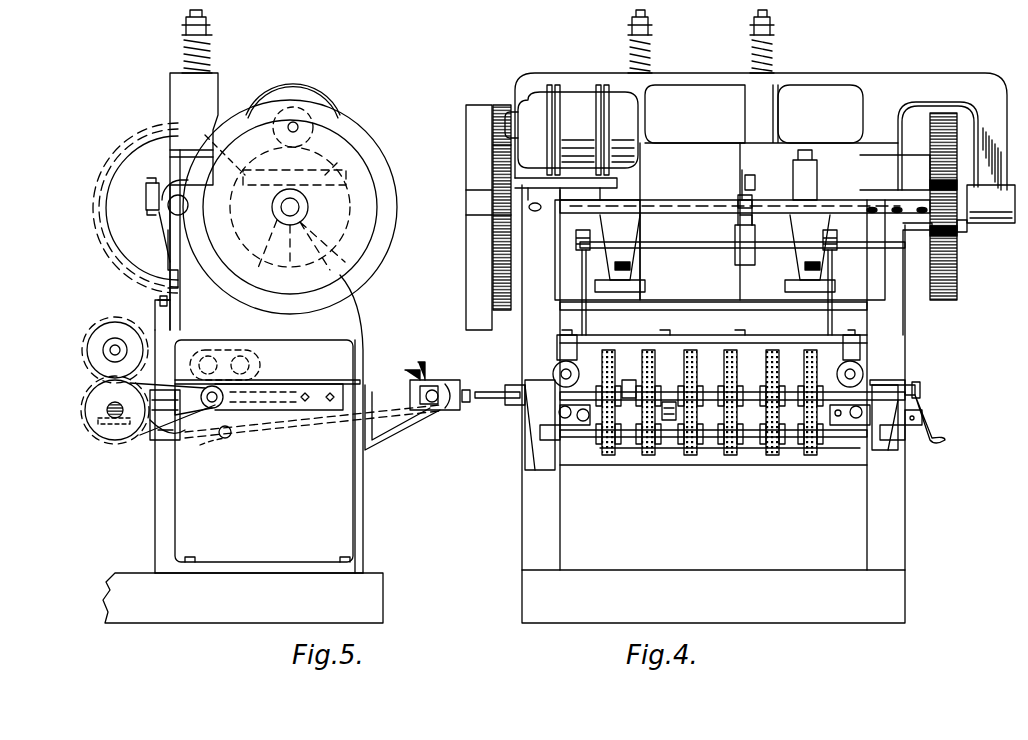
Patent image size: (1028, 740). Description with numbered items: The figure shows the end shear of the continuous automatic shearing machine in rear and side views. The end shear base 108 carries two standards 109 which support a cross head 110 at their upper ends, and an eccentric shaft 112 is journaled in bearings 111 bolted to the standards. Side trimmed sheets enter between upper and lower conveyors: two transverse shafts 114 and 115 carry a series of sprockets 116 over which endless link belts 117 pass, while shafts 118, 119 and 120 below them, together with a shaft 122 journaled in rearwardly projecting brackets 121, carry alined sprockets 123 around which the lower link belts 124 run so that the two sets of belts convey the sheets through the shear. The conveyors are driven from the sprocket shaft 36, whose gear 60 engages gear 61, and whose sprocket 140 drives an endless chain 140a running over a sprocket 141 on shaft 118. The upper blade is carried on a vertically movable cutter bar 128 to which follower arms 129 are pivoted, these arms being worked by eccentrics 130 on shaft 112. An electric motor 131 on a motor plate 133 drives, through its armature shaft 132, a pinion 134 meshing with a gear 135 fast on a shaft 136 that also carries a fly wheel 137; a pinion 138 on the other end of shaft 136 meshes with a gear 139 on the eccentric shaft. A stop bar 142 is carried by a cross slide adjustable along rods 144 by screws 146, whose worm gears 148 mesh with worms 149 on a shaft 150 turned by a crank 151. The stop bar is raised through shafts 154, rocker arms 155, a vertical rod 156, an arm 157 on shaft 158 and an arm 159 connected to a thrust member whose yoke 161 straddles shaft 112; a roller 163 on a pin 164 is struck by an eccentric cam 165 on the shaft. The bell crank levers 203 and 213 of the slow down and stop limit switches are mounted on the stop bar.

In FIG. 5, the end shear base 108 is at (163, 612).
In FIG. 4, the end shear base 108 is at (713, 596).
In FIG. 5, the standards 109 is at (360, 335).
In FIG. 4, the standards 109 is at (522, 336).
In FIG. 5, the cross head 110 is at (205, 90).
In FIG. 4, the cross head 110 is at (892, 70).
In FIG. 5, the bearings 111 is at (158, 215).
In FIG. 4, the bearings 111 is at (885, 190).
In FIG. 5, the eccentric shaft 112 is at (178, 195).
In FIG. 4, the eccentric shaft 112 is at (660, 200).
In FIG. 5, the transverse shaft 114 is at (210, 352).
In FIG. 5, the transverse shaft 115 is at (252, 356).
In FIG. 4, the transverse shaft 115 is at (625, 360).
In FIG. 4, the sprockets 116 is at (586, 356).
In FIG. 5, the link belts 117 is at (238, 352).
In FIG. 4, the link belts 117 is at (696, 358).
In FIG. 5, the shaft 118 is at (178, 388).
In FIG. 4, the shaft 118 is at (478, 400).
In FIG. 5, the shaft 119 is at (268, 410).
In FIG. 5, the shaft 120 is at (226, 450).
In FIG. 4, the shaft 120 is at (716, 440).
In FIG. 5, the brackets 121 is at (388, 436).
In FIG. 4, the brackets 121 is at (530, 445).
In FIG. 5, the shaft 122 is at (433, 390).
In FIG. 4, the shaft 122 is at (662, 444).
In FIG. 4, the sprockets 123 is at (608, 440).
In FIG. 5, the link belts 124 is at (318, 436).
In FIG. 4, the link belts 124 is at (818, 455).
In FIG. 5, the cutter bar 128 is at (165, 310).
In FIG. 4, the follower arms 129 is at (620, 262).
In FIG. 4, the eccentrics 130 is at (632, 178).
In FIG. 5, the electric motor 131 is at (318, 92).
In FIG. 4, the electric motor 131 is at (572, 96).
In FIG. 4, the armature shaft 132 is at (512, 110).
In FIG. 4, the motor plate 133 is at (580, 182).
In FIG. 5, the pinion 134 is at (318, 122).
In FIG. 4, the pinion 134 is at (500, 104).
In FIG. 5, the gear 135 is at (292, 252).
In FIG. 4, the gear 135 is at (490, 172).
In FIG. 5, the shaft 136 is at (276, 212).
In FIG. 4, the shaft 136 is at (490, 212).
In FIG. 5, the fly wheel 137 is at (385, 180).
In FIG. 4, the fly wheel 137 is at (470, 133).
In FIG. 4, the pinion 138 is at (960, 228).
In FIG. 5, the gear 139 is at (95, 242).
In FIG. 4, the gear 139 is at (965, 94).
In FIG. 5, the sprocket 140 is at (128, 438).
In FIG. 5, the endless chain 140a is at (178, 437).
In FIG. 5, the sprocket 141 is at (222, 408).
In FIG. 4, the stop bar 142 is at (780, 365).
In FIG. 4, the rods 144 is at (556, 378).
In FIG. 4, the screws 146 is at (556, 372).
In FIG. 4, the worm gears 148 is at (862, 350).
In FIG. 4, the worms 149 is at (900, 382).
In FIG. 4, the shaft 150 is at (918, 390).
In FIG. 4, the crank 151 is at (932, 428).
In FIG. 4, the shafts 154 is at (560, 425).
In FIG. 4, the rocker arm 155 is at (570, 424).
In FIG. 4, the vertical rod 156 is at (575, 310).
In FIG. 4, the arm 157 is at (578, 250).
In FIG. 4, the shaft 158 is at (652, 250).
In FIG. 4, the arm 159 is at (735, 250).
In FIG. 4, the yoke 161 is at (740, 185).
In FIG. 4, the roller 163 is at (738, 220).
In FIG. 4, the pin 164 is at (738, 198).
In FIG. 4, the eccentric cam 165 is at (752, 176).
In FIG. 4, the bell crank lever 203 is at (655, 360).
In FIG. 4, the bell crank lever 213 is at (670, 400).
In FIG. 5, the sprocket shaft 36 is at (112, 418).
In FIG. 5, the gear 60 is at (88, 358).
In FIG. 5, the gear 61 is at (84, 410).